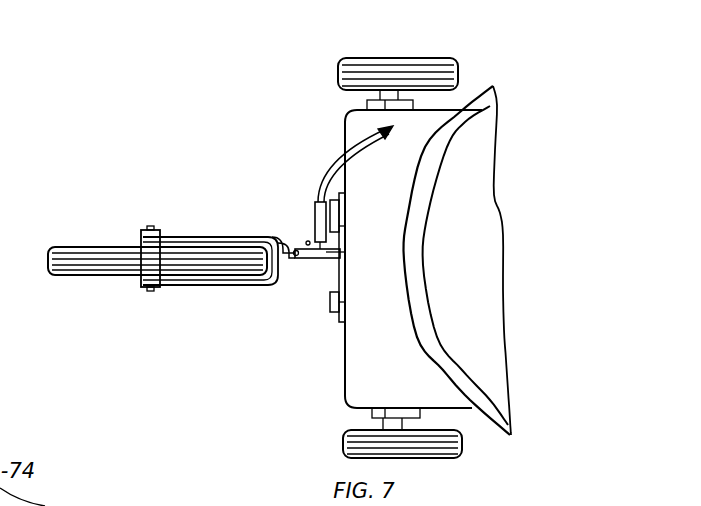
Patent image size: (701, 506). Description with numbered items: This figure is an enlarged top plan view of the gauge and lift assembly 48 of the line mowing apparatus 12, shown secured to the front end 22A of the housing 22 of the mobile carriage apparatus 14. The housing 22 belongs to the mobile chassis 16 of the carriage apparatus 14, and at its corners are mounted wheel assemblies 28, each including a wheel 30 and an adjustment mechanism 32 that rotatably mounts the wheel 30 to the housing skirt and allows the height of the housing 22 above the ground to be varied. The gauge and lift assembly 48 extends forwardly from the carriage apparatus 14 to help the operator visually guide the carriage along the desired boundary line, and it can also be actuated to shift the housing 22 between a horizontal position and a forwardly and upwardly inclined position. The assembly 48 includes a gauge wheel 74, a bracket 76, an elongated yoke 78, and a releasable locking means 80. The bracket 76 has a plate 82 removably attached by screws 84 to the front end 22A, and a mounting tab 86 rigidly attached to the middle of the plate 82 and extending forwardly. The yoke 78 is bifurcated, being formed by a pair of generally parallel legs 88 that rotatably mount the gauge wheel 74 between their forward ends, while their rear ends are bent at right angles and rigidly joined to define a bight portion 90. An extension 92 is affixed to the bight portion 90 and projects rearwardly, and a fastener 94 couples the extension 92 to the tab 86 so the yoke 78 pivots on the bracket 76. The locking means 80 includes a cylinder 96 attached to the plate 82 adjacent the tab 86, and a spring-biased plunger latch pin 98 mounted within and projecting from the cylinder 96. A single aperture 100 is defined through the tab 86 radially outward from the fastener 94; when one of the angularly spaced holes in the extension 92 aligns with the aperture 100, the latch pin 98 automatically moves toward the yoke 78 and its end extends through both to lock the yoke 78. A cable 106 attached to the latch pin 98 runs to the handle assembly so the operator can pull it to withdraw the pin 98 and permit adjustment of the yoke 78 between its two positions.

The line mowing apparatus 12 is at (222, 208).
The mobile carriage apparatus 14 is at (340, 398).
The mobile chassis 16 is at (505, 205).
The housing 22 is at (492, 333).
The front end 22A is at (347, 354).
The wheel assemblies 28 is at (434, 79).
The wheels 30 is at (387, 60).
The adjustment mechanisms 32 is at (397, 108).
The gauge and lift assembly 48 is at (262, 290).
The gauge wheel 74 is at (73, 278).
The bracket 76 is at (340, 300).
The elongated yoke 78 is at (180, 290).
The releasable locking means 80 is at (302, 190).
The plate 82 is at (343, 245).
The screws 84 is at (340, 205).
The mounting tab 86 is at (340, 252).
The legs 88 is at (178, 336).
The bight portion 90 is at (295, 247).
The extension 92 is at (277, 293).
The fastener 94 is at (308, 242).
The cylinder 96 is at (312, 200).
The plunger latch pin 98 is at (341, 228).
The aperture 100 is at (320, 262).
The cable 106 is at (357, 143).